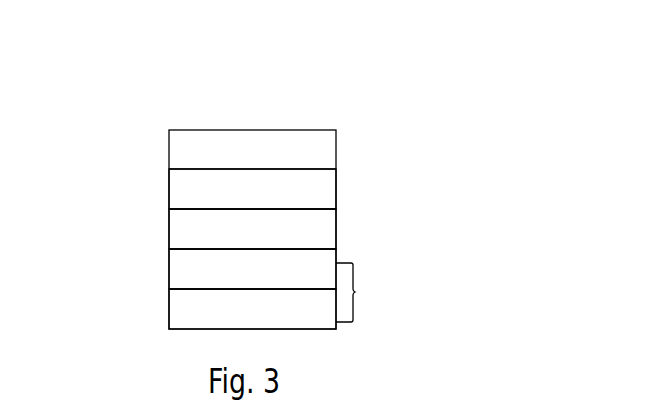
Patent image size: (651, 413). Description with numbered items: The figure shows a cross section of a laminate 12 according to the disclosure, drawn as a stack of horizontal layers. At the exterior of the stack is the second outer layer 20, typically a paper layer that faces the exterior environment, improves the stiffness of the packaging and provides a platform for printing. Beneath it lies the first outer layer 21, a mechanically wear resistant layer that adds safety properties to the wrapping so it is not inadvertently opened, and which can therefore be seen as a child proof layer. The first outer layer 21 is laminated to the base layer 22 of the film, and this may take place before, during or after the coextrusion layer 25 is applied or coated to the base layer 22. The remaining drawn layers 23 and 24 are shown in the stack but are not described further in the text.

The laminate 12 is at (420, 213).
The second outer layer 20 is at (252, 107).
The first outer layer 21 is at (148, 179).
The base layer 22 is at (148, 222).
The third layer 23 is at (146, 268).
The fourth layer 24 is at (135, 332).
The coextrusion layer 25 is at (358, 292).